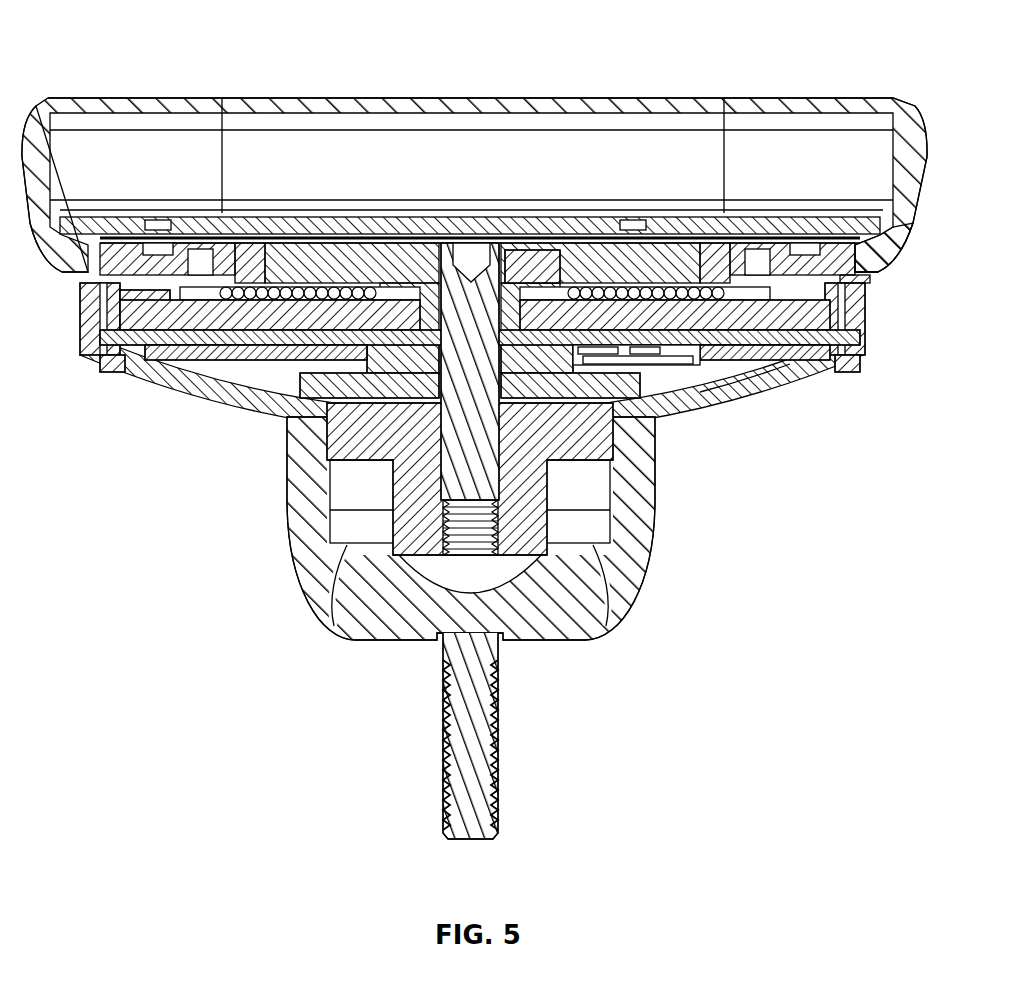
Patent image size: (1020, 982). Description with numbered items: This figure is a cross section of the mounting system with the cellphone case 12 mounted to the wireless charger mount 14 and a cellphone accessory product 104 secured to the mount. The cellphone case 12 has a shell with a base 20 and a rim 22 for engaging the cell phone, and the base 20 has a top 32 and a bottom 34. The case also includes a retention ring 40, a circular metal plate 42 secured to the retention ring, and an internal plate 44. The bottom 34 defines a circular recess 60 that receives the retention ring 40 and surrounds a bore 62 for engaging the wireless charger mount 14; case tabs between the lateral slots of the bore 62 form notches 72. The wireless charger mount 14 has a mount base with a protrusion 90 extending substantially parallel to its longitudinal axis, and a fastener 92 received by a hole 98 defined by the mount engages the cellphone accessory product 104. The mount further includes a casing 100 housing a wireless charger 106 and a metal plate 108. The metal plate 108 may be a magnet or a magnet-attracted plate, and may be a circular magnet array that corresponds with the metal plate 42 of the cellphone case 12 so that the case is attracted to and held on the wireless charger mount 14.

The cellphone case 12 is at (929, 108).
The wireless charger mount 14 is at (792, 402).
The base 20 is at (900, 258).
The rim 22 is at (26, 122).
The top 32 is at (197, 215).
The bottom 34 is at (862, 278).
The retention ring 40 is at (82, 300).
The metal plate 42 is at (143, 307).
The internal plate 44 is at (567, 217).
The recess 60 is at (82, 318).
The bore 62 is at (285, 247).
The notches 72 is at (237, 235).
The protrusion 90 is at (300, 243).
The fastener 92 is at (513, 247).
The hole 98 is at (447, 443).
The casing 100 is at (723, 407).
The cellphone accessory product 104 is at (632, 585).
The wireless charger 106 is at (723, 347).
The metal plate 108 is at (106, 363).